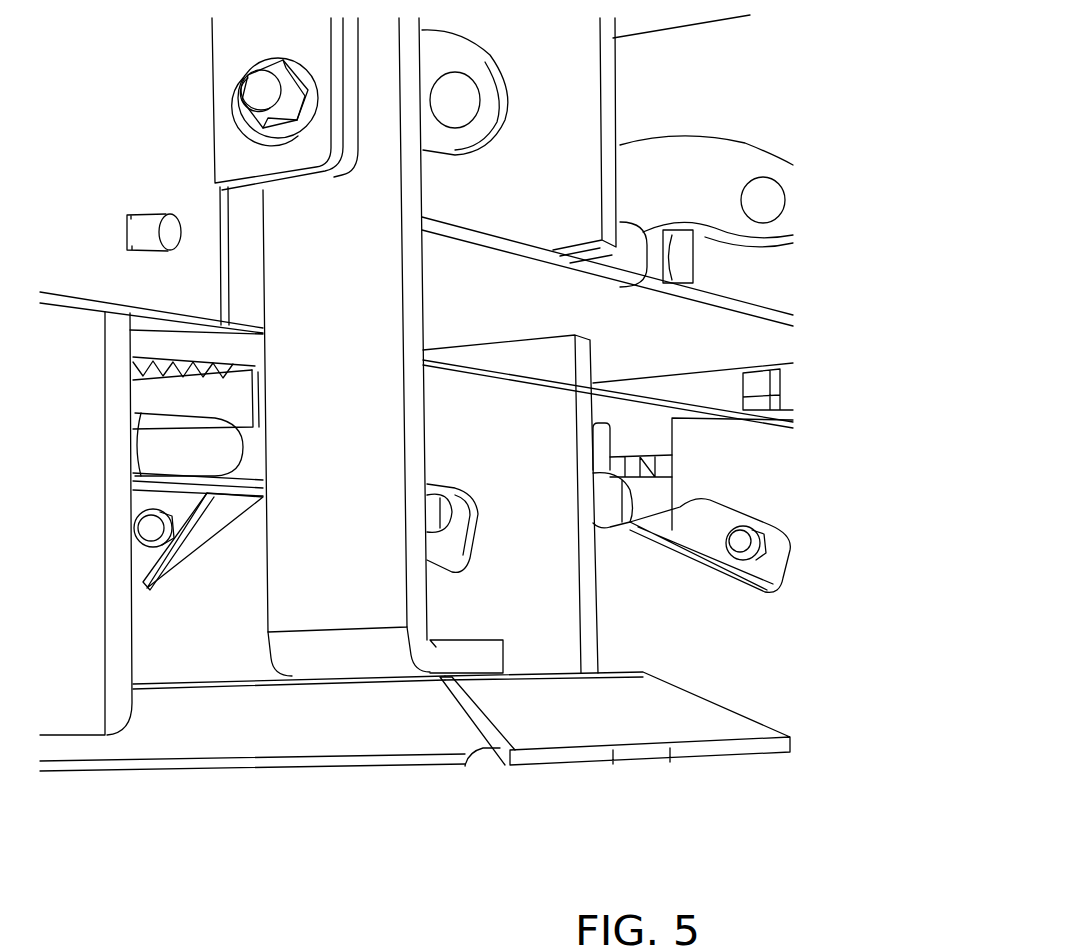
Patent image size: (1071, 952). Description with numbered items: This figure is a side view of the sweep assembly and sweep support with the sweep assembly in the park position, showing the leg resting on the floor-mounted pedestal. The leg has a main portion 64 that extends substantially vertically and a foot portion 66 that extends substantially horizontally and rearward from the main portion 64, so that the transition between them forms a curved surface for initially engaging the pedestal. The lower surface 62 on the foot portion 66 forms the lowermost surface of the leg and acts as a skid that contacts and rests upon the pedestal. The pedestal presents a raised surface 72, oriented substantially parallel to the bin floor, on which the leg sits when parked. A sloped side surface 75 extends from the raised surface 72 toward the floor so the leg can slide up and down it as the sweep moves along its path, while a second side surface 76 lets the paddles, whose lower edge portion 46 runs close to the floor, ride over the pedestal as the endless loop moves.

The lower edge portion 46 is at (52, 740).
The lower surface 62 is at (472, 677).
The main portion 64 is at (410, 488).
The foot portion 66 is at (458, 648).
The raised surface 72 is at (242, 680).
The side surface 75 is at (552, 718).
The side surface 76 is at (187, 727).